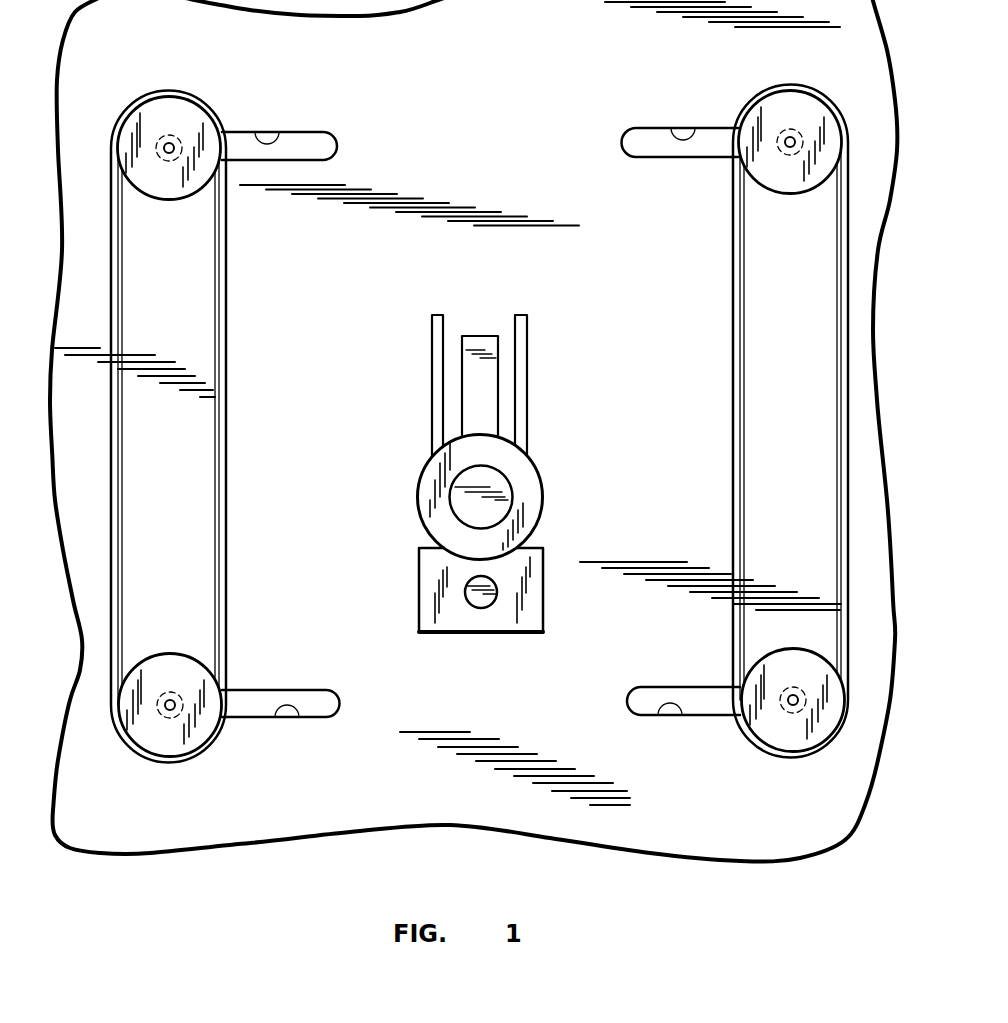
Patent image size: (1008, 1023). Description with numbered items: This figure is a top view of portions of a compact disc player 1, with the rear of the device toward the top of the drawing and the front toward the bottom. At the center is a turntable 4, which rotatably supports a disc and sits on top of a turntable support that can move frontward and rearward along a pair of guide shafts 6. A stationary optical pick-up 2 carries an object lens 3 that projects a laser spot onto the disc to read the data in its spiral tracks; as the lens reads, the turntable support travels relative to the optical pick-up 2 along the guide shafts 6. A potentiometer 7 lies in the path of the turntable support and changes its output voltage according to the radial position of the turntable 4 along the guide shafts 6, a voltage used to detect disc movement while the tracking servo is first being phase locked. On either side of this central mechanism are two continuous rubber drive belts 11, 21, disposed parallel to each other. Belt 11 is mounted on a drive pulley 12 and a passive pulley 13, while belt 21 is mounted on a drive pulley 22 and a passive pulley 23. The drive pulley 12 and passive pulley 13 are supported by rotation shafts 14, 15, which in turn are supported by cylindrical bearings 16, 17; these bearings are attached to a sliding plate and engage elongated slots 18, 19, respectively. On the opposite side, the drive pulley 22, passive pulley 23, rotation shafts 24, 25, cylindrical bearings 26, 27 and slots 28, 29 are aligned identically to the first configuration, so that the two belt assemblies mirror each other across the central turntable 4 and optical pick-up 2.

The compact disc player 1 is at (456, 105).
The optical pick-up 2 is at (498, 620).
The object lens 3 is at (477, 600).
The turntable 4 is at (527, 502).
The guide shafts 6 is at (440, 317).
The potentiometer 7 is at (490, 400).
The continuous rubber drive belt 11 is at (227, 405).
The drive pulley 12 is at (162, 745).
The passive pulley 13 is at (167, 104).
The rotation shaft 14 is at (163, 705).
The rotation shaft 15 is at (163, 141).
The cylindrical bearing 16 is at (185, 707).
The cylindrical bearing 17 is at (180, 136).
The elongated slot 18 is at (292, 717).
The elongated slot 19 is at (278, 133).
The continuous rubber drive belt 21 is at (732, 405).
The drive pulley 22 is at (795, 740).
The passive pulley 23 is at (787, 98).
The rotation shaft 24 is at (797, 705).
The rotation shaft 25 is at (803, 138).
The cylindrical bearing 26 is at (785, 712).
The cylindrical bearing 27 is at (780, 130).
The slot 28 is at (660, 713).
The slot 29 is at (673, 128).